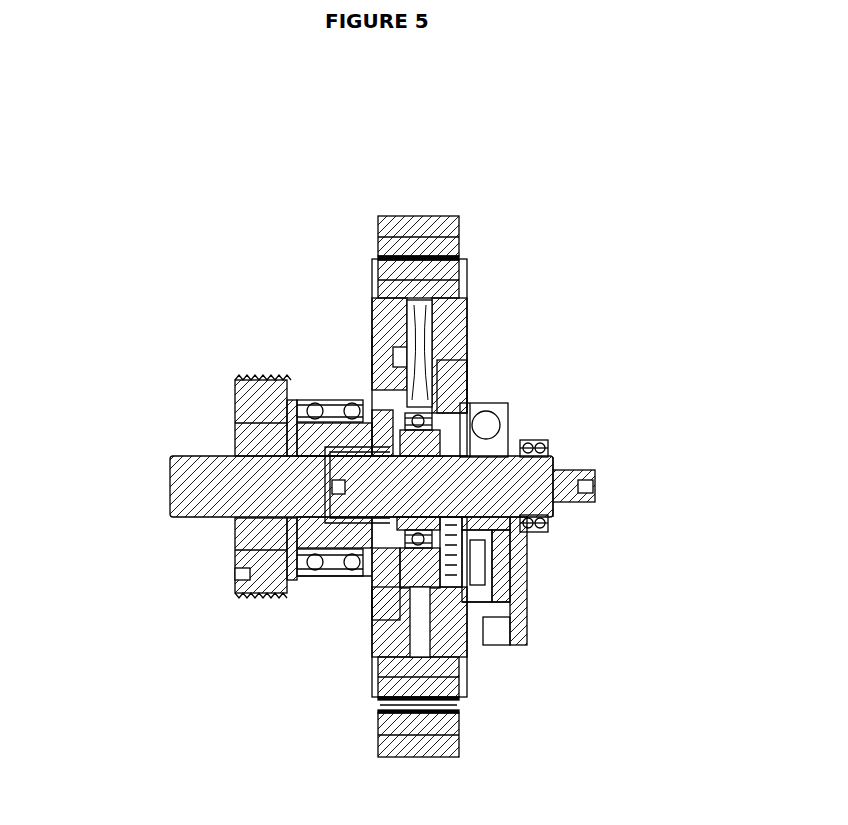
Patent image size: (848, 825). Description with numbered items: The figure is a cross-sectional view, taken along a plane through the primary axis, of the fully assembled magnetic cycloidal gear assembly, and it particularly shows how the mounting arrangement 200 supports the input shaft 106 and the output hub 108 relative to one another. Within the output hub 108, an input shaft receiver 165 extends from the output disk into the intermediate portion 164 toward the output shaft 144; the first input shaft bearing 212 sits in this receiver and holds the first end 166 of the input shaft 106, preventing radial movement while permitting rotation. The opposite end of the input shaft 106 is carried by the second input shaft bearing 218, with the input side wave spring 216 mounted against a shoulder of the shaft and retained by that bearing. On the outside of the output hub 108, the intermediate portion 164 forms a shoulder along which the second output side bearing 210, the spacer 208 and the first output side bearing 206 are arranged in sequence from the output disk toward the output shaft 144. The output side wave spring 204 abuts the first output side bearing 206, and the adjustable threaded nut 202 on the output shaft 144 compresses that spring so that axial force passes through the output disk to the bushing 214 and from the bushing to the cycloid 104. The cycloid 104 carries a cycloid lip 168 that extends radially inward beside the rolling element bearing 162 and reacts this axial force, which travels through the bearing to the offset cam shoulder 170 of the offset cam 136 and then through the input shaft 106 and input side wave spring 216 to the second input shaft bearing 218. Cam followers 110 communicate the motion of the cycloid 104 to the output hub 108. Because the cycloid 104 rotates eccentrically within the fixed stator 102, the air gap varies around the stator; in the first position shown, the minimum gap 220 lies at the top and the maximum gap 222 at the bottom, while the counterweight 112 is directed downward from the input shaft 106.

The mounting arrangement 200 is at (283, 222).
The stator 102 is at (462, 215).
The cycloid 104 is at (433, 352).
The input shaft 106 is at (590, 465).
The output hub 108 is at (170, 466).
The cam followers 110 is at (367, 372).
The counterweight 112 is at (520, 596).
The offset cam 136 is at (432, 440).
The output shaft 144 is at (345, 497).
The rolling element bearing 162 is at (467, 405).
The intermediate portion 164 is at (270, 442).
The input shaft receiver 165 is at (323, 468).
The first end 166 is at (262, 512).
The cycloid lip 168 is at (412, 346).
The offset cam shoulder 170 is at (440, 520).
The adjustable threaded nut 202 is at (282, 588).
The output side wave spring 204 is at (292, 577).
The first output side bearing 206 is at (302, 580).
The spacer 208 is at (333, 578).
The second output side bearing 210 is at (360, 400).
The first input shaft bearing 212 is at (372, 535).
The bushing 214 is at (370, 342).
The input side wave spring 216 is at (527, 442).
The second input shaft bearing 218 is at (542, 452).
The minimum gap 220 is at (470, 265).
The maximum gap 222 is at (462, 705).